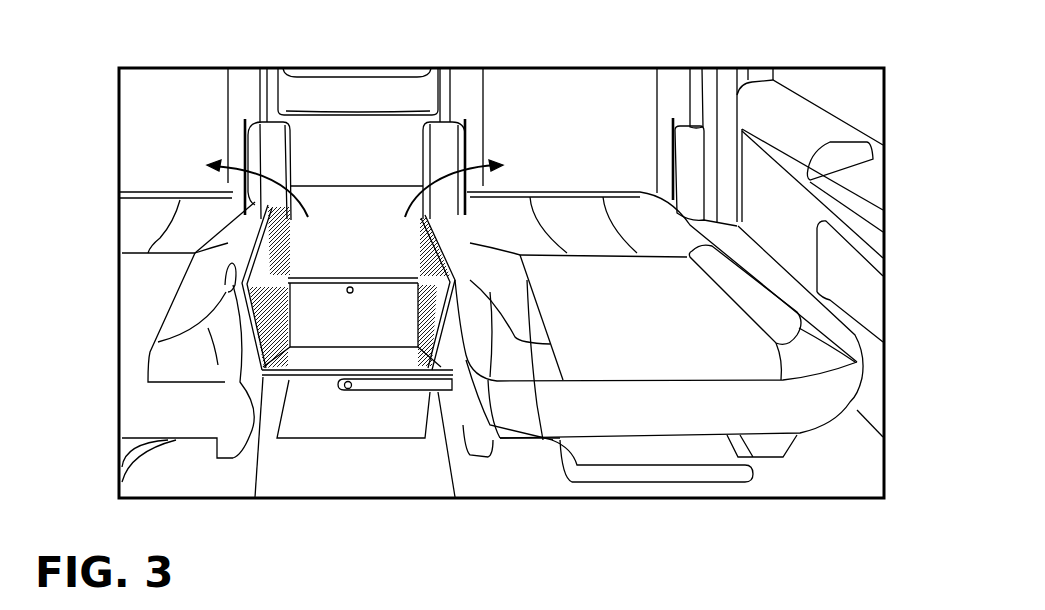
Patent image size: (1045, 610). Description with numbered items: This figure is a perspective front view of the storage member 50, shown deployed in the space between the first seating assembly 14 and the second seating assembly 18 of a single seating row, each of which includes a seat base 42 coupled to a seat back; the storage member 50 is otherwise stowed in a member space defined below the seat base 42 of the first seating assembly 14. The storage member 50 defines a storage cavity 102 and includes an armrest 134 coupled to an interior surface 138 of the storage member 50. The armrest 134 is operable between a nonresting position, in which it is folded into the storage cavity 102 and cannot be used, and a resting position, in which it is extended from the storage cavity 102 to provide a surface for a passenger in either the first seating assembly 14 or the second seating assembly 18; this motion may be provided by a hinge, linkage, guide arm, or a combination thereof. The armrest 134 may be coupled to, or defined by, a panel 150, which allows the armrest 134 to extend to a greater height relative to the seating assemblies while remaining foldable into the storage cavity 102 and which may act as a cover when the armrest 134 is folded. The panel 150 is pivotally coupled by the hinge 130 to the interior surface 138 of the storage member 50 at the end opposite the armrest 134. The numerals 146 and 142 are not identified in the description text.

The storage cavity 102 is at (366, 302).
The first seating assembly 14 is at (762, 222).
The seat base 42 is at (813, 314).
The second seating assembly 18 is at (107, 245).
The latch 146 is at (226, 290).
The armrest 134 is at (236, 326).
The interior surface 138 is at (298, 378).
The storage member 50 is at (331, 459).
The hinge 130 is at (425, 352).
The panel 150 is at (462, 282).
The cushion edge 142 is at (543, 440).